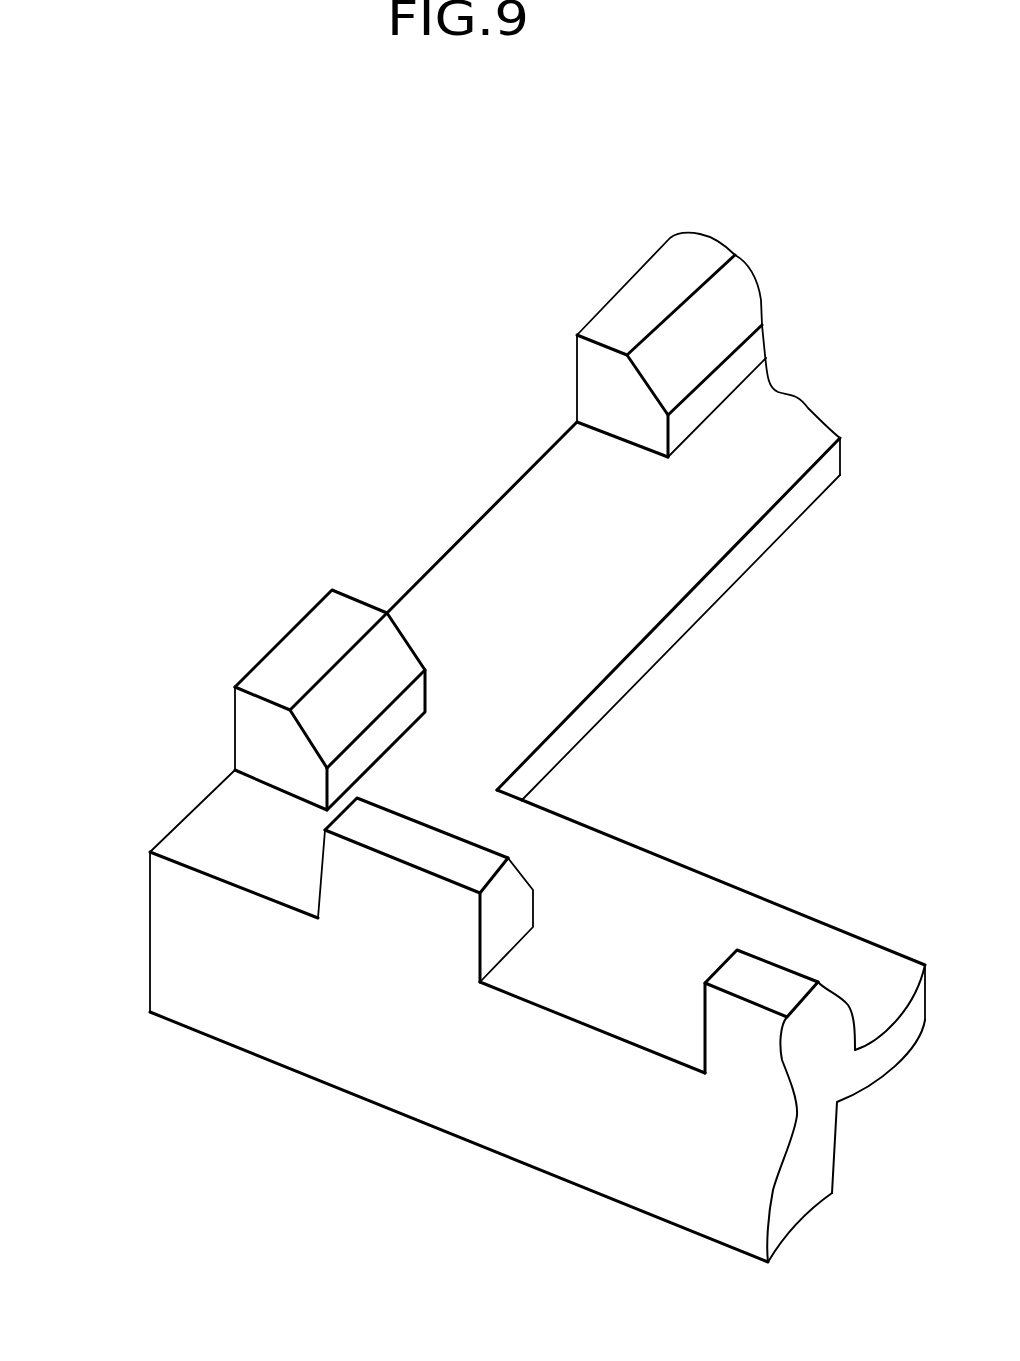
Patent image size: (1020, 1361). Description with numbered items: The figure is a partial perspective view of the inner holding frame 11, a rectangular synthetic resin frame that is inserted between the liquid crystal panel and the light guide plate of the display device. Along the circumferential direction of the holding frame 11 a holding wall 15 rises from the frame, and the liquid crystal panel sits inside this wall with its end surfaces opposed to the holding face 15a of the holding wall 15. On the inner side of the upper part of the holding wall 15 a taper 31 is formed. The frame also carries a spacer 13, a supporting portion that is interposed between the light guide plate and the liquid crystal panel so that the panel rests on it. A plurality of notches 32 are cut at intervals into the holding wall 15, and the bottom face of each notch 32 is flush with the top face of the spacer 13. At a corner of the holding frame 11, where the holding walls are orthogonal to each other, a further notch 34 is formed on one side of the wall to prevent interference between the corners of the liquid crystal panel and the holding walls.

The inner holding frame 11 is at (222, 600).
The spacer 13 is at (743, 555).
The holding wall 15 is at (258, 733).
The holding face 15a is at (400, 712).
The taper 31 is at (368, 658).
The notch 32 is at (528, 500).
The notch 34 is at (227, 852).